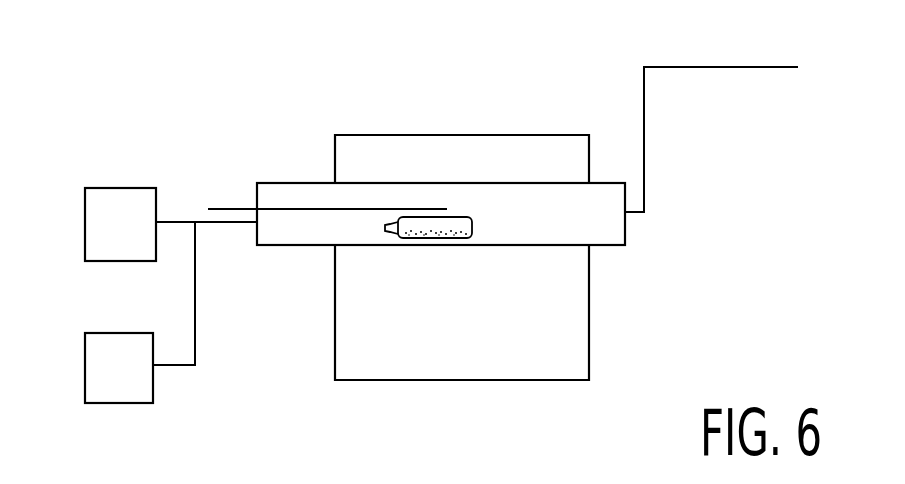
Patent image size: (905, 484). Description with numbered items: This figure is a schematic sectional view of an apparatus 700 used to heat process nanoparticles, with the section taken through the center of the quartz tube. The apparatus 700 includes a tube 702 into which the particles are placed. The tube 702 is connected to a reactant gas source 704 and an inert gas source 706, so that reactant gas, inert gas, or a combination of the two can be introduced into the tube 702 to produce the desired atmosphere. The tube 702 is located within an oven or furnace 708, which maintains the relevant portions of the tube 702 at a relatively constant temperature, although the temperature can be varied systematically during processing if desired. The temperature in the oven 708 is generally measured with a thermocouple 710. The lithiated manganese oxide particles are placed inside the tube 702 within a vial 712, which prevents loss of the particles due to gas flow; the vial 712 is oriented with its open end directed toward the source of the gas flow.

The apparatus 700 is at (445, 59).
The tube 702 is at (610, 245).
The reactant gas source 704 is at (117, 397).
The inert gas source 706 is at (101, 188).
The oven 708 is at (570, 337).
The thermocouple 710 is at (230, 210).
The vial 712 is at (467, 217).